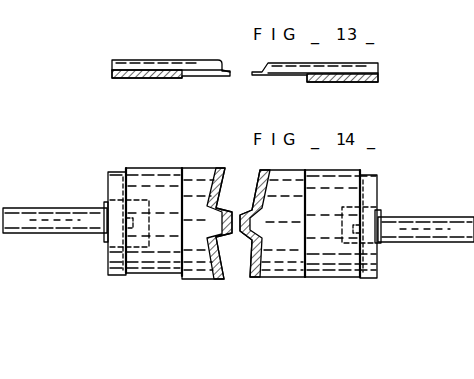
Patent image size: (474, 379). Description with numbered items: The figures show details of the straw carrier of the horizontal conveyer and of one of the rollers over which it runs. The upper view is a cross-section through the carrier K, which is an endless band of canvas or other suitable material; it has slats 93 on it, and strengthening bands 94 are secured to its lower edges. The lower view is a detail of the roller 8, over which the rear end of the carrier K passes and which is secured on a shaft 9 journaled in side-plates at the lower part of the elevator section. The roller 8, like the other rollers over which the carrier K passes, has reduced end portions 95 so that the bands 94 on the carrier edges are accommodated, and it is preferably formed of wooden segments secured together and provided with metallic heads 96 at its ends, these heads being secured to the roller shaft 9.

In FIG. 13, the slats 93 is at (140, 66).
In FIG. 13, the strengthening bands 94 is at (141, 78).
In FIG. 13, the carrier K is at (219, 74).
In FIG. 14, the shaft 9 is at (53, 223).
In FIG. 14, the metallic heads 96 is at (108, 274).
In FIG. 14, the reduced end portions 95 is at (144, 278).
In FIG. 14, the roller 8 is at (204, 282).